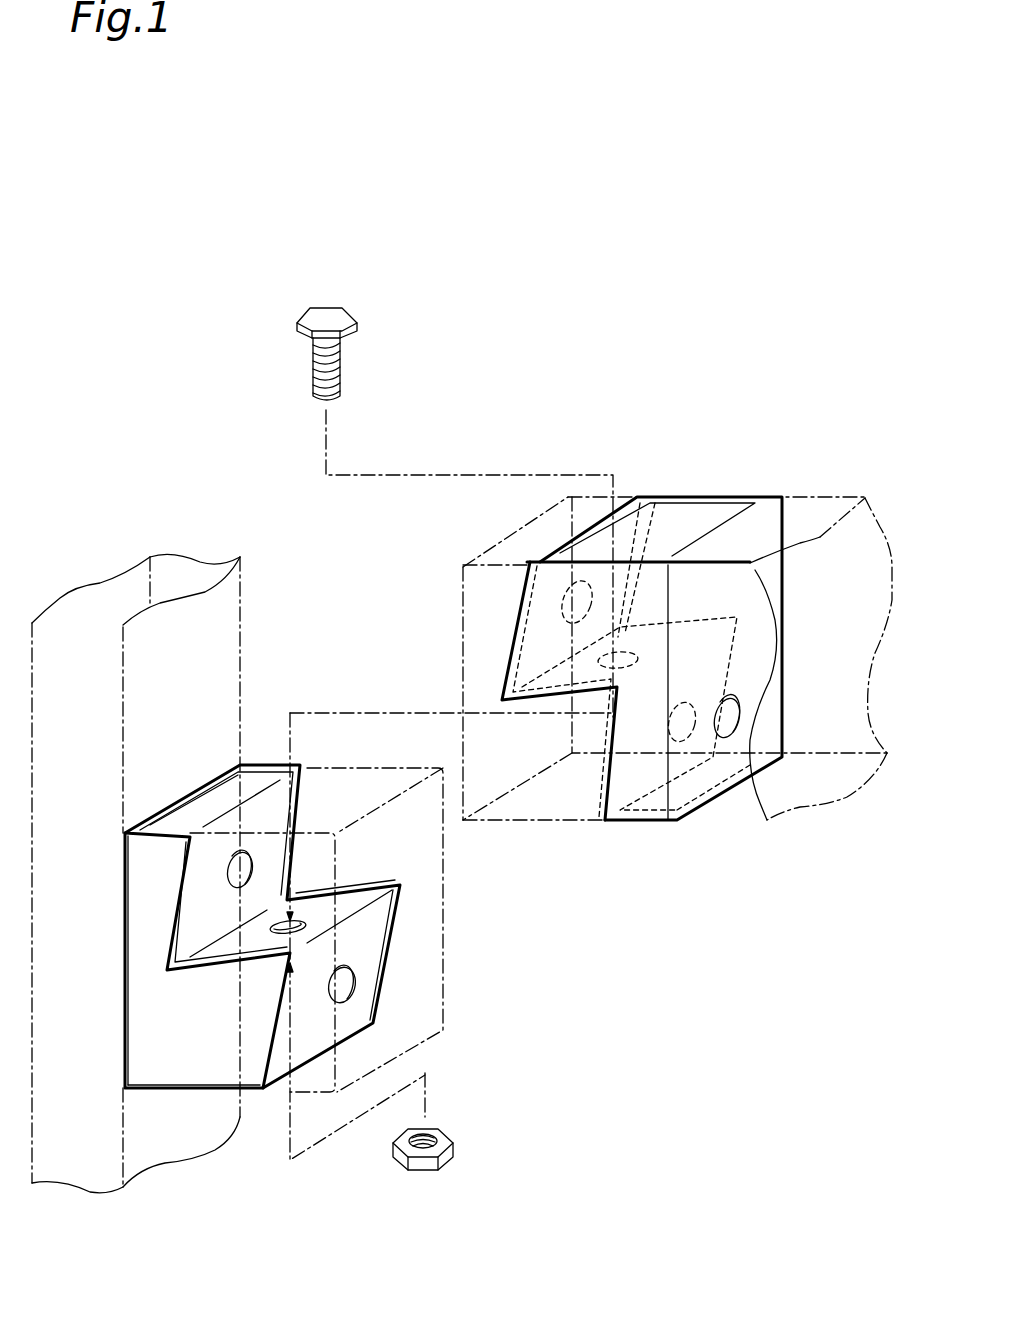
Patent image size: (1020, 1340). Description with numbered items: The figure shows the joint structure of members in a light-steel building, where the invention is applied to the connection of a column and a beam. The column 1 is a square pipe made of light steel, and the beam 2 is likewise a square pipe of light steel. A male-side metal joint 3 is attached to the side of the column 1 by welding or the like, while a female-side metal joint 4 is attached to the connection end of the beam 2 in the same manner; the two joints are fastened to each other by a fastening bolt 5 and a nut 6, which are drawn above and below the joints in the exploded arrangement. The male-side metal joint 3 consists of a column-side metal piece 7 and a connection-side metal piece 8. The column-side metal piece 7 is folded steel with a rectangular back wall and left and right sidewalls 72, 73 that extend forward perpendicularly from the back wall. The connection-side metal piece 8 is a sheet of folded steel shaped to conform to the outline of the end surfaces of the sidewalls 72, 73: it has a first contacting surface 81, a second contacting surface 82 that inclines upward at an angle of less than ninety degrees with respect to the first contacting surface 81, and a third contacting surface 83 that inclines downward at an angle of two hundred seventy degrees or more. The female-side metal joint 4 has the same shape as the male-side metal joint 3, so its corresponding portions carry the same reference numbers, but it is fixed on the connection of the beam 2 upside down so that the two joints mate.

The column 1 is at (183, 673).
The beam 2 is at (792, 527).
The male-side metal joint 3 is at (335, 941).
The female-side metal joint 4 is at (620, 833).
The fastening bolt 5 is at (353, 367).
The nut 6 is at (458, 1140).
The column-side metal piece 7 is at (125, 806).
The connection-side metal piece 8 is at (257, 783).
The left sidewall 72 is at (203, 1053).
The right sidewall 73 is at (363, 903).
The first contacting surface 81 is at (310, 919).
The second contacting surface 82 is at (272, 818).
The third contacting surface 83 is at (313, 1032).